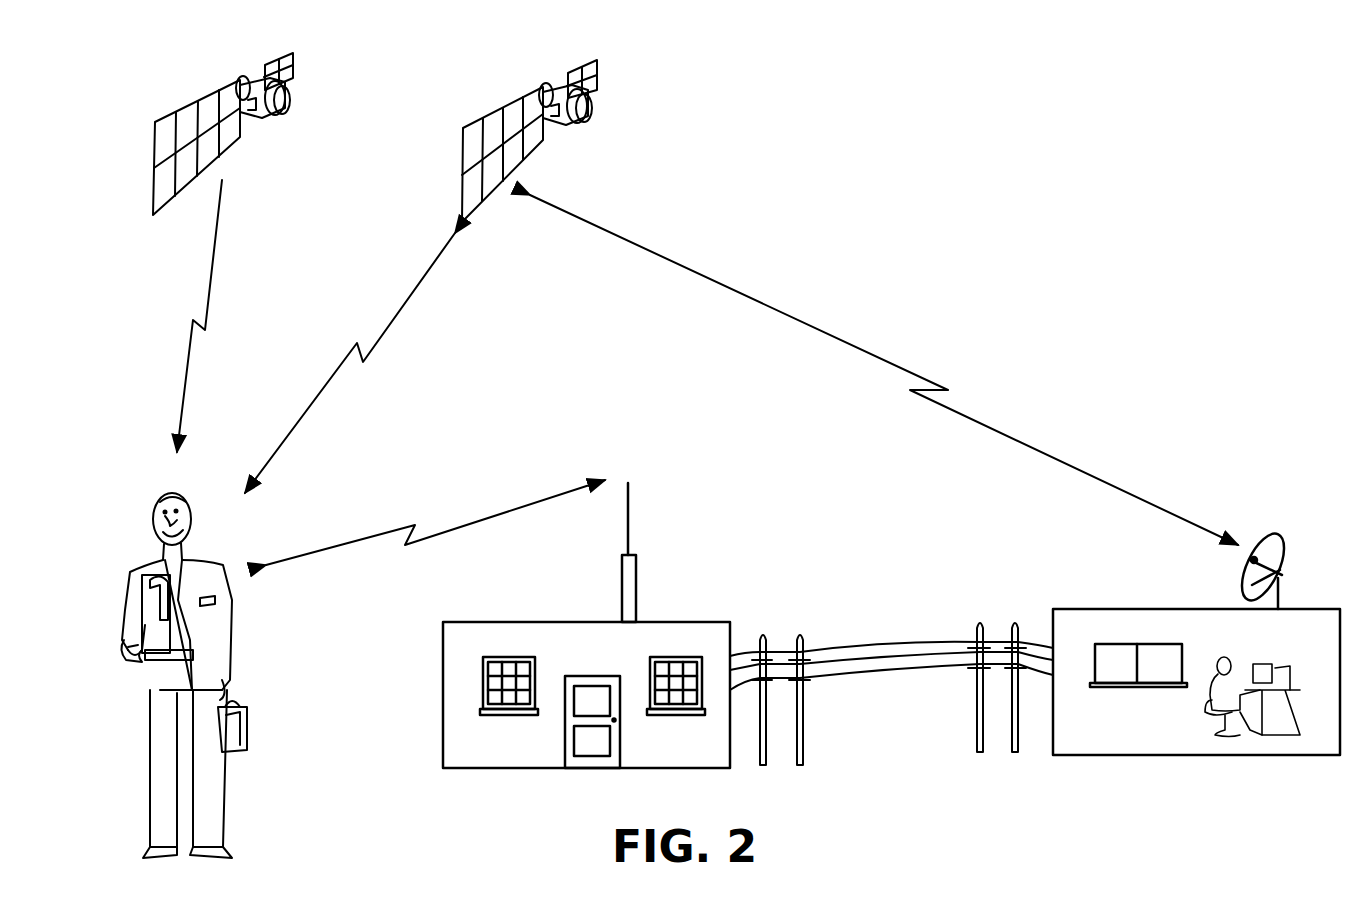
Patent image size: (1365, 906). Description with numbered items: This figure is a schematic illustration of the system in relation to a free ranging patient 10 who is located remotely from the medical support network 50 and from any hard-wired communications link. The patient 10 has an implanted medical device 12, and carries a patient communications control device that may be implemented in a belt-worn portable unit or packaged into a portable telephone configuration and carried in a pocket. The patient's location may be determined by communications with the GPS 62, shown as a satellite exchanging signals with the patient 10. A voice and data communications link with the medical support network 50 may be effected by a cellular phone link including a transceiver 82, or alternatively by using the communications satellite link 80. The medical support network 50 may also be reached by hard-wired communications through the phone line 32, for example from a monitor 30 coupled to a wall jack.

The patient 10 is at (228, 852).
The implanted medical device 12 is at (132, 582).
The monitor 30 is at (140, 680).
The phone line 32 is at (838, 640).
The medical support network 50 is at (1222, 757).
The GPS 62 is at (238, 128).
The communications satellite link 80 is at (590, 127).
The transceiver 82 is at (690, 622).